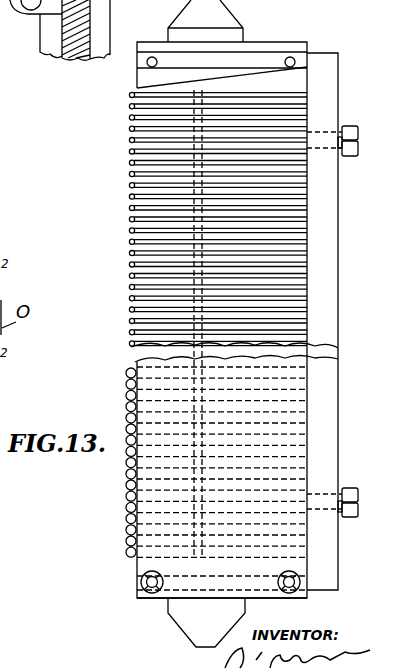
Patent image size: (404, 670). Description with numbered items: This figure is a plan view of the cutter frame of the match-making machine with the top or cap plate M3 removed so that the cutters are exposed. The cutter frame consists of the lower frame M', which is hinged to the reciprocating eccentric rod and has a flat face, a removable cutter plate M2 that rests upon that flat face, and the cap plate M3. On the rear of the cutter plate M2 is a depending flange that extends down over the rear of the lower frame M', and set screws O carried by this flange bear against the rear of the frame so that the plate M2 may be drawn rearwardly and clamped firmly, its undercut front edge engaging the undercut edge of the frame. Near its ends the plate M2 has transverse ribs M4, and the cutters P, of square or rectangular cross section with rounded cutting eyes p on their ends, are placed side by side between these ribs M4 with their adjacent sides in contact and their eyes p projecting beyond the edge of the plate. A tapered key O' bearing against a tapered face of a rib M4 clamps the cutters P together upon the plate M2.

The lower frame M' is at (224, 21).
The tapered key O' is at (246, 58).
The cutter P is at (302, 93).
The transverse rib M4 is at (148, 76).
The cutter plate M2 is at (317, 550).
The cap plate M3 is at (140, 567).
The set screws O is at (334, 321).
The cutting eye p is at (128, 117).